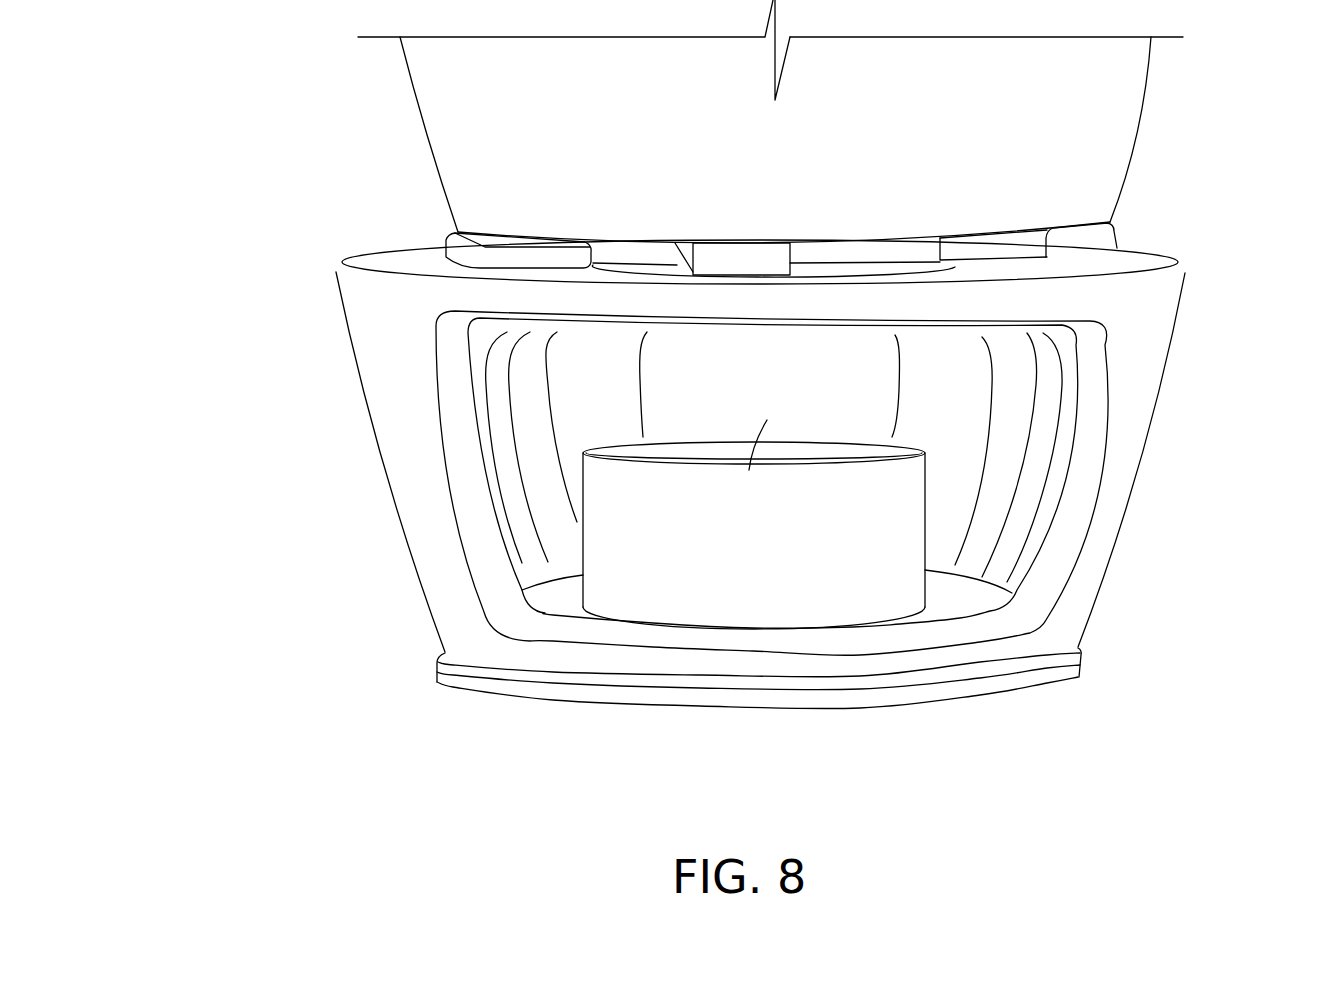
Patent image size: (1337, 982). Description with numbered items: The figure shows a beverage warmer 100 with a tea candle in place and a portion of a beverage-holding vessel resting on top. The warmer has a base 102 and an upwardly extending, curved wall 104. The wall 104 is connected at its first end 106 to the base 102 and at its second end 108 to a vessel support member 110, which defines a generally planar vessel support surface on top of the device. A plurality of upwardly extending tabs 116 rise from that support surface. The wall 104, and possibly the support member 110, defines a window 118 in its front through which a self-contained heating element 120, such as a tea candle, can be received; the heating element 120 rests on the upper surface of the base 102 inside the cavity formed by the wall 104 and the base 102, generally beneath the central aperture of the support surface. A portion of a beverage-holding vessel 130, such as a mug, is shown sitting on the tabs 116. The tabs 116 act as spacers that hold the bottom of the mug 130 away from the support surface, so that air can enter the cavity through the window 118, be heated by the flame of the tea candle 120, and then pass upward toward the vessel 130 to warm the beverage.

The beverage warmer 100 is at (192, 341).
The base 102 is at (973, 608).
The curved wall 104 is at (882, 387).
The first end 106 is at (1010, 628).
The second end 108 is at (1142, 350).
The vessel support member 110 is at (1222, 287).
The upwardly extending tabs 116 is at (443, 241).
The window 118 is at (483, 530).
The self-contained heating element 120 is at (768, 523).
The beverage-holding vessel 130 is at (963, 133).